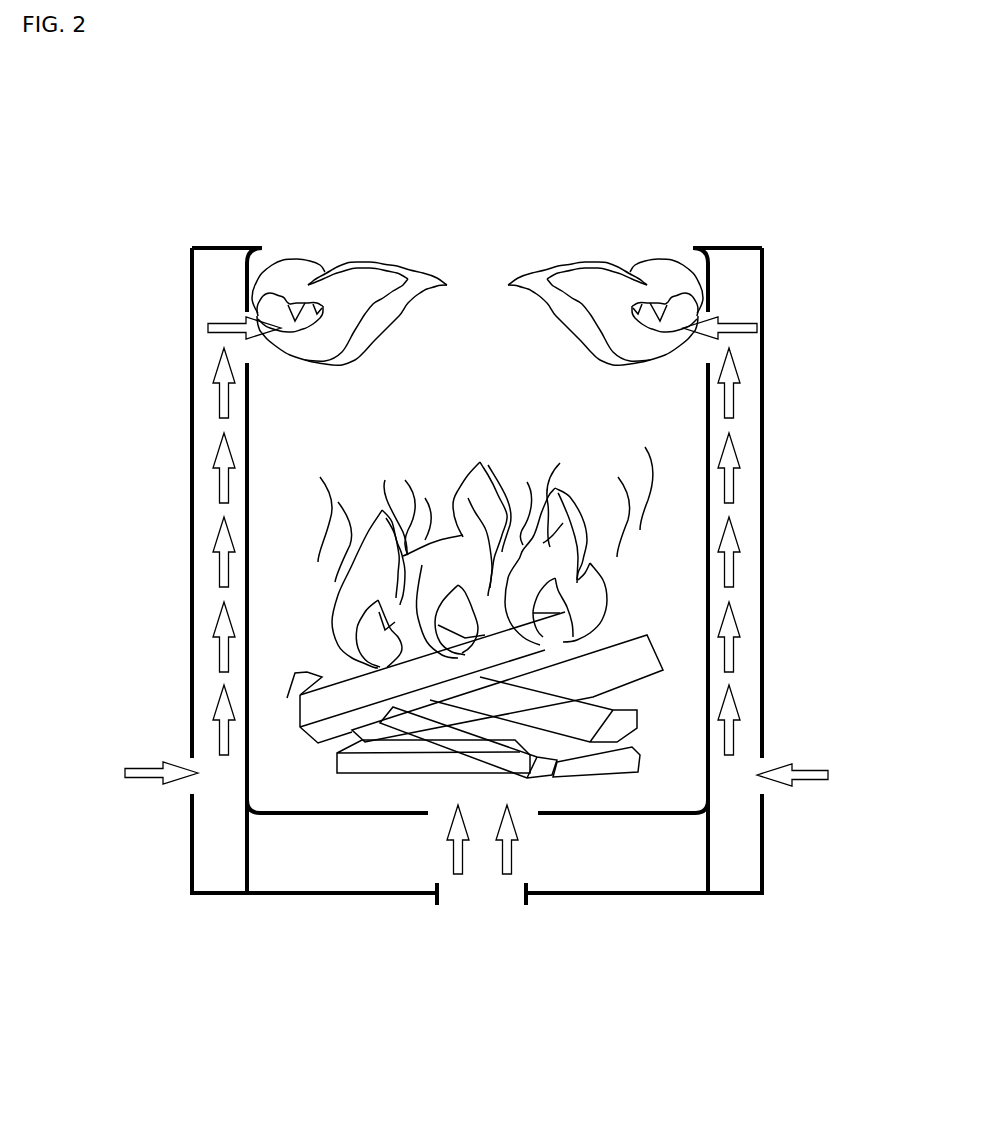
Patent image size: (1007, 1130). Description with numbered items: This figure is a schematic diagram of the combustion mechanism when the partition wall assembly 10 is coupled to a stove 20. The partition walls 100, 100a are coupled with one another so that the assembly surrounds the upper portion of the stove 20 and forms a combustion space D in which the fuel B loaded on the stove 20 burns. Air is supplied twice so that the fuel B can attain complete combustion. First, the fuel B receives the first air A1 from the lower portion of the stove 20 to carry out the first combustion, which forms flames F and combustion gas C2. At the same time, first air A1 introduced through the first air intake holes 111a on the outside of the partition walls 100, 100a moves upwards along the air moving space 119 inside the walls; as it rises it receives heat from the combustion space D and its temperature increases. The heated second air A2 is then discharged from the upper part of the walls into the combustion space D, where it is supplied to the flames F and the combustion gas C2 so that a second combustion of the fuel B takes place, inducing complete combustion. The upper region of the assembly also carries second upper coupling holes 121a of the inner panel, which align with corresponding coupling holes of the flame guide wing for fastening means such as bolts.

The partition wall assembly 10 is at (677, 190).
The stove 20 is at (642, 858).
The partition wall 100 is at (163, 872).
The partition wall 100a is at (778, 857).
The first air intake holes 111a is at (190, 757).
The air moving space 119 is at (208, 348).
The second upper coupling holes 121a is at (308, 323).
The first air A1 is at (475, 848).
The second air A2 is at (478, 315).
The fuel B is at (637, 655).
The combustion gas C2 is at (501, 514).
The combustion space D is at (492, 323).
The flames F is at (597, 583).